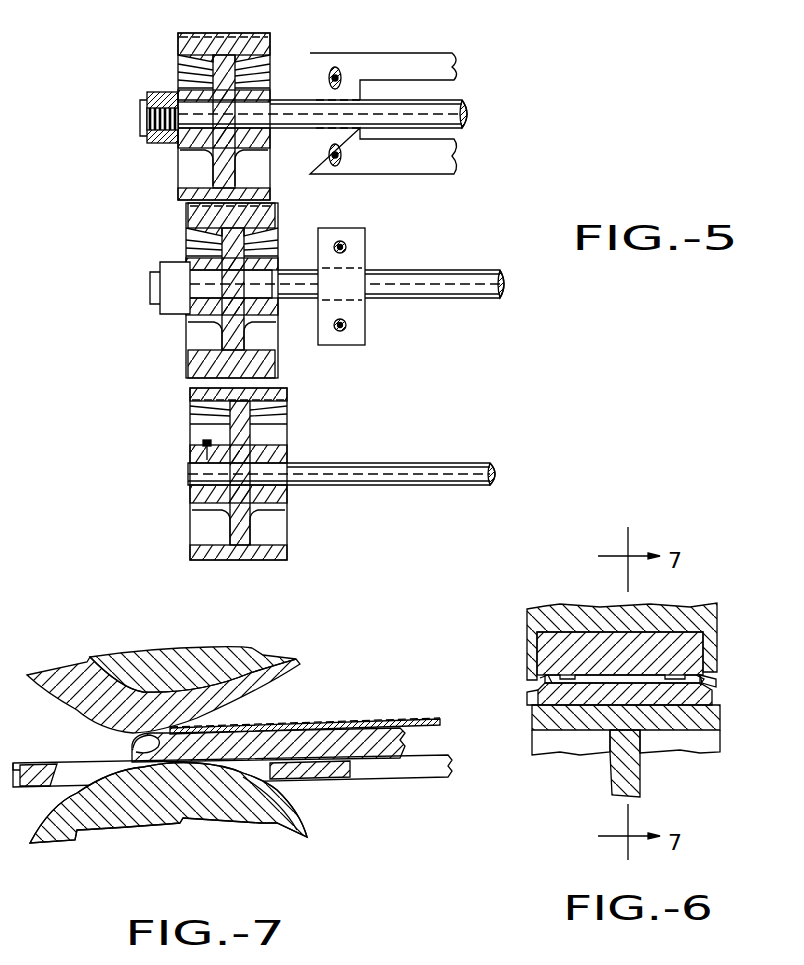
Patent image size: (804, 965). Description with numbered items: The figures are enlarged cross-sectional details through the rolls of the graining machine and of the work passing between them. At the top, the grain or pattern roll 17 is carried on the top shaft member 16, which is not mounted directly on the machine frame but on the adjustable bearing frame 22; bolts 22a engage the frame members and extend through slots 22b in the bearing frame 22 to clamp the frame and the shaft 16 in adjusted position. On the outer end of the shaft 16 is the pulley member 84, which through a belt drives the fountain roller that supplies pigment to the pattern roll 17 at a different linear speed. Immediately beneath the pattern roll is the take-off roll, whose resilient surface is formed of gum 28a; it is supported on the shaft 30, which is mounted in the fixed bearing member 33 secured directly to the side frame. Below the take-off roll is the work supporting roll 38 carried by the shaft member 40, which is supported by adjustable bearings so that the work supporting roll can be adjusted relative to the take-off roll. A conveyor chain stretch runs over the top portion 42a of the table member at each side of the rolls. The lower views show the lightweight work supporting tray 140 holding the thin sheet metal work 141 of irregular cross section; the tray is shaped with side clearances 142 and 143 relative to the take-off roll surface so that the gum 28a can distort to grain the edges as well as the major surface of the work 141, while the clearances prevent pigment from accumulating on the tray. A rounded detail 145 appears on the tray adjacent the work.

In FIG. 5, the grain or pattern roll 17 is at (208, 34).
In FIG. 5, the pulley member 84 is at (172, 97).
In FIG. 5, the top shaft member 16 is at (455, 101).
In FIG. 5, the adjustable bearing frame 22 is at (444, 58).
In FIG. 5, the bolt 22a is at (333, 66).
In FIG. 5, the slot 22b is at (338, 104).
In FIG. 5, the gum 28a is at (262, 214).
In FIG. 6, the gum 28a is at (556, 656).
In FIG. 7, the gum 28a is at (292, 661).
In FIG. 5, the shaft 30 is at (455, 273).
In FIG. 5, the fixed bearing member 33 is at (368, 264).
In FIG. 5, the work supporting roll 38 is at (262, 562).
In FIG. 6, the work supporting roll 38 is at (640, 788).
In FIG. 7, the work supporting roll 38 is at (262, 818).
In FIG. 5, the shaft member 40 is at (388, 463).
In FIG. 6, the work supporting tray 140 is at (540, 702).
In FIG. 7, the work supporting tray 140 is at (365, 752).
In FIG. 6, the work 141 is at (718, 746).
In FIG. 7, the work 141 is at (358, 726).
In FIG. 6, the clearance 142 is at (548, 683).
In FIG. 6, the clearance 143 is at (710, 683).
In FIG. 7, the rounded edge 145 is at (134, 748).
In FIG. 7, the top portion of table member 42a is at (462, 775).